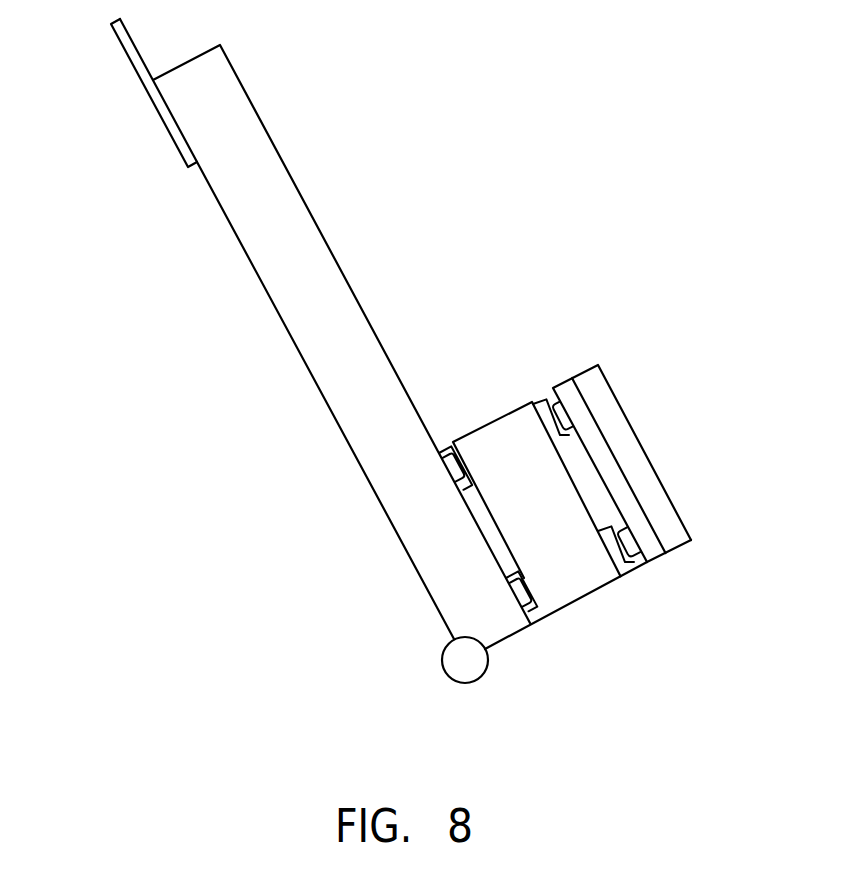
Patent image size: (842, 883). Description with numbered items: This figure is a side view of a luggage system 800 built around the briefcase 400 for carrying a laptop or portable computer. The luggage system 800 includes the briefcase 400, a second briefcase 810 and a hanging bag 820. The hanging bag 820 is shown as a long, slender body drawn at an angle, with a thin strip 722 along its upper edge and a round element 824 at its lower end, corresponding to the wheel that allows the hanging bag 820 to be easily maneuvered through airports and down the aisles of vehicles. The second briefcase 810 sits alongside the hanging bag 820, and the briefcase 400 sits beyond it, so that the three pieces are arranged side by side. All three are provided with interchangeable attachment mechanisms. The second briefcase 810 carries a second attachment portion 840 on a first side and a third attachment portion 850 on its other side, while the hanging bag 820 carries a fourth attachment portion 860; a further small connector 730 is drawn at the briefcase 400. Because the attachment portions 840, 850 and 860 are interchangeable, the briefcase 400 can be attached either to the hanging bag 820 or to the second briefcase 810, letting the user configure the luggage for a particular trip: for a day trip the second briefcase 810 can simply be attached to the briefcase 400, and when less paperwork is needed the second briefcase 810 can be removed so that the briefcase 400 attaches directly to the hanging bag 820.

The luggage system 800 is at (703, 82).
The stop flange 722 is at (130, 58).
The hanging bag 820 is at (325, 258).
The pivot 824 is at (451, 678).
The second briefcase 810 is at (502, 427).
The briefcase 400 is at (632, 442).
The rail 730 is at (633, 553).
The second attachment portion 840 is at (627, 572).
The third attachment portion 850 is at (535, 598).
The fourth attachment portion 860 is at (533, 623).